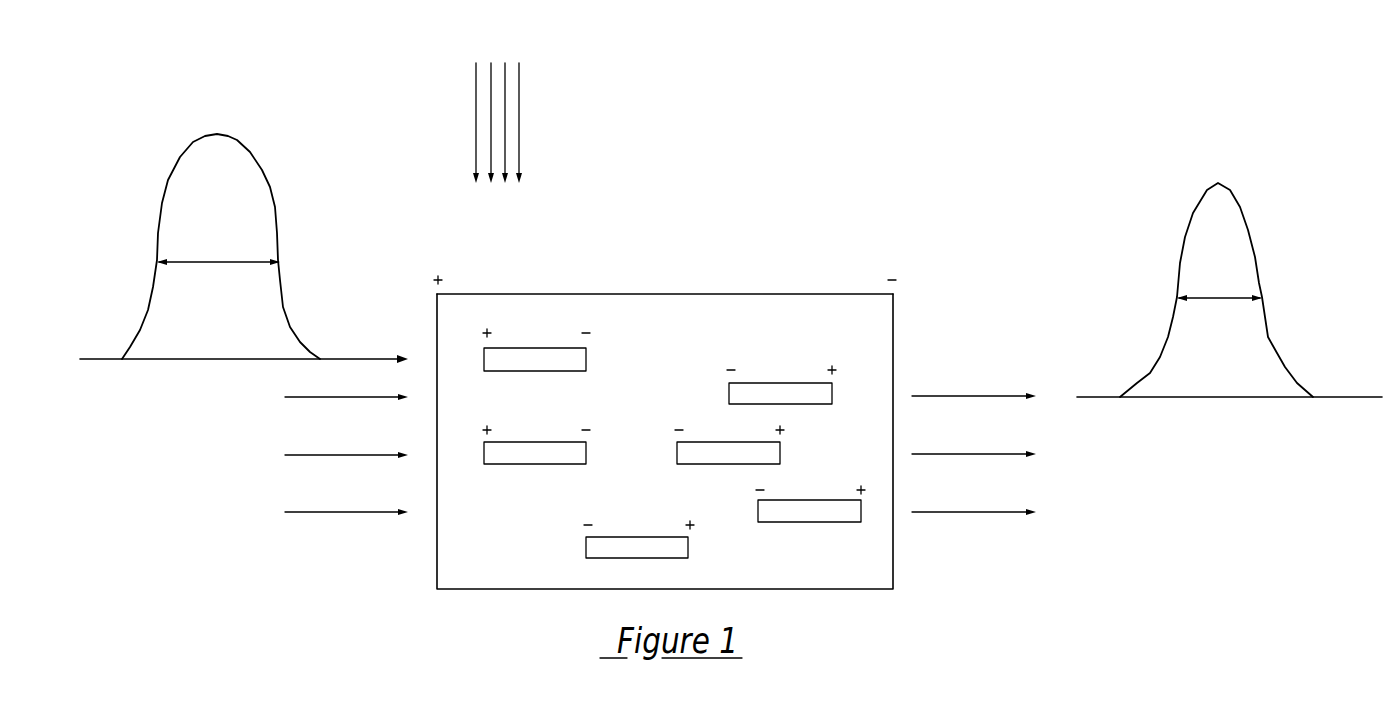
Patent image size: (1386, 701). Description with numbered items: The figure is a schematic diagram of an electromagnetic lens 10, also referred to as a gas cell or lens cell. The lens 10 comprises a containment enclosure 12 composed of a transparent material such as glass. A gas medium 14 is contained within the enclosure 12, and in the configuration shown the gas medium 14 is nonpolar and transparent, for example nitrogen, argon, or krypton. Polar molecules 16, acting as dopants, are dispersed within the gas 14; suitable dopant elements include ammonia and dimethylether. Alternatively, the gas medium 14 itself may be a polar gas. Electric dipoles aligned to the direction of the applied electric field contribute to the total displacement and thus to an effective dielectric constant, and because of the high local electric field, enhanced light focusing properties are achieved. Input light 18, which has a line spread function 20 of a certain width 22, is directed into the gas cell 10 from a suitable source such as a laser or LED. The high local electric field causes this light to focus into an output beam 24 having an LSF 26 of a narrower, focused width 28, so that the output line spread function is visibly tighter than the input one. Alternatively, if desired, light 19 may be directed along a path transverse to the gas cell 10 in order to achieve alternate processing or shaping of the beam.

The electromagnetic lens 10 is at (609, 263).
The containment enclosure 12 is at (778, 293).
The gas medium 14 is at (816, 562).
The polar molecules 16 is at (594, 563).
The input light 18 is at (348, 513).
The light 19 is at (519, 158).
The line spread function 20 is at (277, 215).
The width 22 is at (216, 256).
The output beam 24 is at (955, 396).
The LSF 26 is at (1257, 252).
The focused width 28 is at (1217, 300).